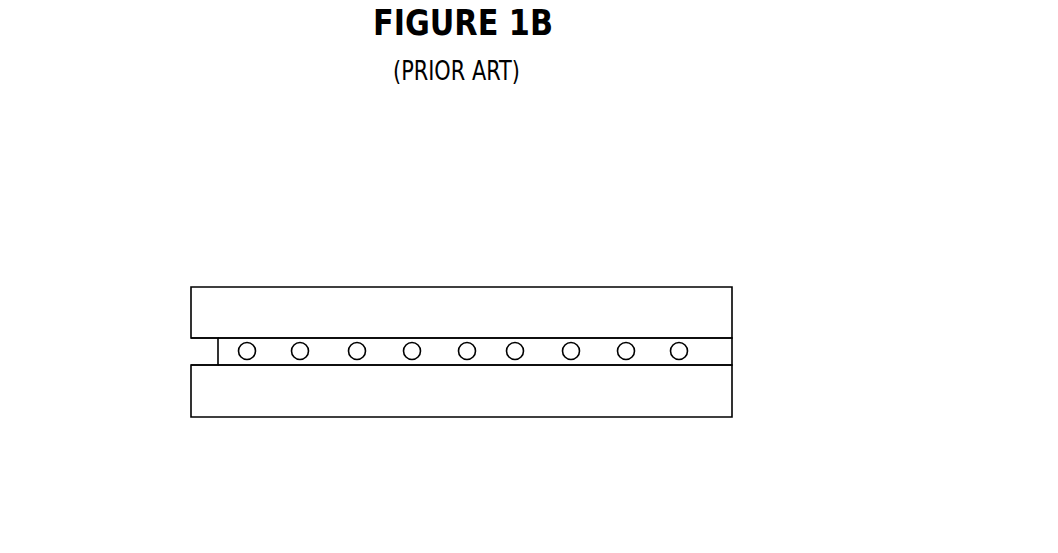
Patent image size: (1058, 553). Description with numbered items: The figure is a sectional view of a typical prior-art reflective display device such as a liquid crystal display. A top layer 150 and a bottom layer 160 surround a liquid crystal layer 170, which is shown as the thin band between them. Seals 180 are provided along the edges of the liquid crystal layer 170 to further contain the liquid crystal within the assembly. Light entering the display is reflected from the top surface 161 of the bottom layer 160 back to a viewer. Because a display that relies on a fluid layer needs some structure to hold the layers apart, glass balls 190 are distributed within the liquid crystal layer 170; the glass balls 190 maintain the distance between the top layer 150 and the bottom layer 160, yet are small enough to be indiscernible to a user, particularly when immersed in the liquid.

The top layer 150 is at (240, 297).
The bottom layer 160 is at (264, 407).
The liquid crystal layer 170 is at (596, 340).
The seals 180 is at (195, 355).
The glass balls 190 is at (457, 338).
The top surface 161 is at (652, 352).